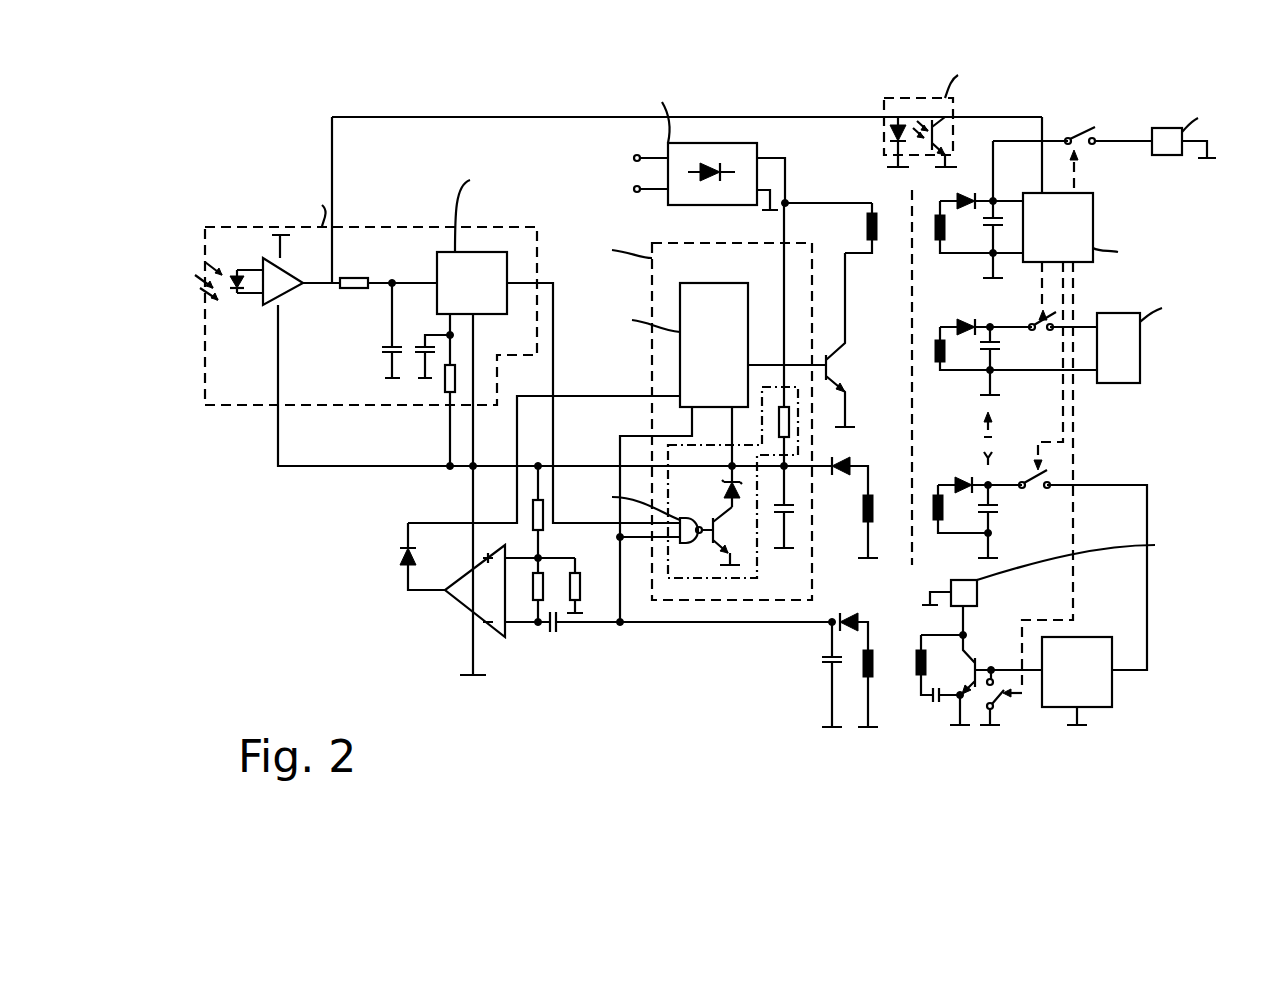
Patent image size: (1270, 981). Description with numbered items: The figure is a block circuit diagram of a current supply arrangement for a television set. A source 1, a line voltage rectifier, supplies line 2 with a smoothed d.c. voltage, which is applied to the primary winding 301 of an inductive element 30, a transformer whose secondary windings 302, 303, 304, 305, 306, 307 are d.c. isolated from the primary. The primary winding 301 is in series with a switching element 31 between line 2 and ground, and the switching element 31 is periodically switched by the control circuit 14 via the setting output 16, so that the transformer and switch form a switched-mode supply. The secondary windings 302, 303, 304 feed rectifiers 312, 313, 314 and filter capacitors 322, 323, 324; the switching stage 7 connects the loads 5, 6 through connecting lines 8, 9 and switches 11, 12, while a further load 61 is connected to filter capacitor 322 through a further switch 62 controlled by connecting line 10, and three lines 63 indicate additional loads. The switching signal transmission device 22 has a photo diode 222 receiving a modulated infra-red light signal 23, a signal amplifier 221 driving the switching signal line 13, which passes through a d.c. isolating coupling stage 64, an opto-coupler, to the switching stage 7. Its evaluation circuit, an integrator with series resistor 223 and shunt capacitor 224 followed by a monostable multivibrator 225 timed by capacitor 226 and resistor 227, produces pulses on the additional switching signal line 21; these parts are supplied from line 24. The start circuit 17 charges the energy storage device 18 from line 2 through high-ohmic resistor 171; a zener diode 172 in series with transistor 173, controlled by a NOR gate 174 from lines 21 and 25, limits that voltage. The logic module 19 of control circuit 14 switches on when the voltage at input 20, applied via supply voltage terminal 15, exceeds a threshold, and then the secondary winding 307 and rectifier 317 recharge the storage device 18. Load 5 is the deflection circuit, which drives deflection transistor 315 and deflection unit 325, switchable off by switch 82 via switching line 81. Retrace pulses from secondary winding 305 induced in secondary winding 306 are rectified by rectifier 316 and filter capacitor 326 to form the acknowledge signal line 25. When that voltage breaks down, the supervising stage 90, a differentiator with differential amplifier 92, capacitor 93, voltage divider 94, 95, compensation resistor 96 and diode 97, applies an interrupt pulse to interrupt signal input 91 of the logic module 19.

The source 1 is at (714, 143).
The line 2 is at (830, 203).
The load 5 is at (1108, 707).
The load 6 is at (1140, 348).
The switching stage 7 is at (1093, 228).
The connecting line 8 is at (1063, 412).
The connecting line 9 is at (1046, 290).
The connecting line 10 is at (1080, 172).
The switch 11 is at (1033, 490).
The switch 12 is at (1040, 332).
The switching signal line 13 is at (765, 118).
The control circuit 14 is at (680, 243).
The supply voltage terminal 15 is at (822, 466).
The setting output 16 is at (790, 365).
The start circuit 17 is at (772, 387).
The energy storage device 18 is at (774, 518).
The logic module 19 is at (660, 345).
The input 20 is at (673, 514).
The additional switching signal line 21 is at (553, 378).
The switching signal transmission device 22 is at (370, 227).
The light signal 23 is at (193, 292).
The line 24 is at (390, 466).
The acknowledge signal line 25 is at (722, 625).
The inductive element 30 is at (894, 312).
The switching element 31 is at (838, 372).
The further load 61 is at (1165, 128).
The further switch 62 is at (1086, 125).
The three lines 63 is at (984, 425).
The d.c. isolating coupling stage 64 is at (925, 98).
The switching line 81 is at (1073, 578).
The switch 82 is at (1000, 710).
The supervising stage 90 is at (533, 695).
The interrupt signal input 91 is at (680, 392).
The differential amplifier 92 is at (455, 605).
The capacitor 93 is at (562, 630).
The voltage divider resistor 94 is at (538, 525).
The voltage divider resistor 95 is at (580, 588).
The compensation resistor 96 is at (543, 588).
The diode 97 is at (400, 558).
The high-ohmic resistor 171 is at (789, 422).
The zener diode 172 is at (726, 492).
The transistor 173 is at (739, 536).
The NOR gate 174 is at (690, 548).
The signal amplifier 221 is at (300, 290).
The photo diode 222 is at (240, 300).
The series resistor 223 is at (350, 278).
The shunt capacitor 224 is at (386, 355).
The monostable multivibrator 225 is at (507, 243).
The capacitor 226 is at (423, 360).
The resistor 227 is at (447, 392).
The primary winding 301 is at (867, 228).
The secondary winding 302 is at (979, 227).
The secondary winding 303 is at (1016, 348).
The secondary winding 304 is at (948, 526).
The secondary winding 305 is at (944, 680).
The secondary winding 306 is at (863, 672).
The secondary winding 307 is at (863, 510).
The rectifier 312 is at (978, 198).
The rectifier 313 is at (966, 321).
The rectifier 314 is at (960, 477).
The deflection transistor 315 is at (1000, 638).
The rectifier 316 is at (855, 600).
The rectifier 317 is at (835, 480).
The filter capacitor 322 is at (988, 230).
The filter capacitor 323 is at (1000, 370).
The filter capacitor 324 is at (1000, 515).
The deflection unit 325 is at (977, 595).
The filter capacitor 326 is at (828, 660).